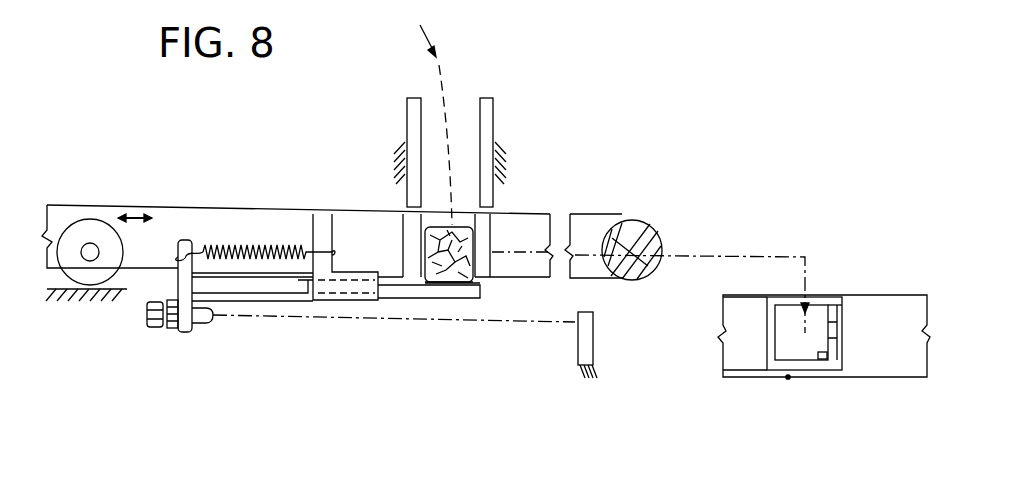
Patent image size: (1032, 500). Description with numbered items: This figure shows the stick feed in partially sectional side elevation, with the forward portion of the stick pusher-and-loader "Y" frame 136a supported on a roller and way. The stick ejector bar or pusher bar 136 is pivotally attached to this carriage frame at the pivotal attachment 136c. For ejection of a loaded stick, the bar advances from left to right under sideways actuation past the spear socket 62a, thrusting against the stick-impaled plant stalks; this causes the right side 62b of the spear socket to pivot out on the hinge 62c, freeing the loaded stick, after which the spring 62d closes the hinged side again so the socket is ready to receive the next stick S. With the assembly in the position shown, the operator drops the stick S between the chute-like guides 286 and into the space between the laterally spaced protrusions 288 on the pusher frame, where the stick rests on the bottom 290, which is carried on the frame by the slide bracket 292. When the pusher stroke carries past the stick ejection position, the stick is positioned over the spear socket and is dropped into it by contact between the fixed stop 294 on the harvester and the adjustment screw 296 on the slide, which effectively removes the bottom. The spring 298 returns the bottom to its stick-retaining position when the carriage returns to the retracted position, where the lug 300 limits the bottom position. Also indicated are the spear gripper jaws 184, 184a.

The stick pusher-and-loader "Y" frame 136a is at (240, 207).
The spring 298 is at (257, 247).
The stick S is at (422, 227).
The chute-like guides 286 is at (494, 106).
The laterally spaced protrusions 288 is at (497, 227).
The pivotal attachment 136c is at (655, 222).
The stick ejector bar 136 is at (663, 243).
The right side of spear socket 62b is at (842, 303).
The hinge 62c is at (830, 335).
The adjustment screw 296 is at (212, 325).
The lug 300 is at (307, 295).
The slide bracket 292 is at (358, 302).
The bottom 290 is at (447, 298).
The fixed stop 294 is at (578, 355).
The spear gripper jaw 184a is at (755, 372).
The spear gripper jaw 184 is at (892, 373).
The spear socket 62a is at (788, 377).
The spring 62d is at (828, 360).